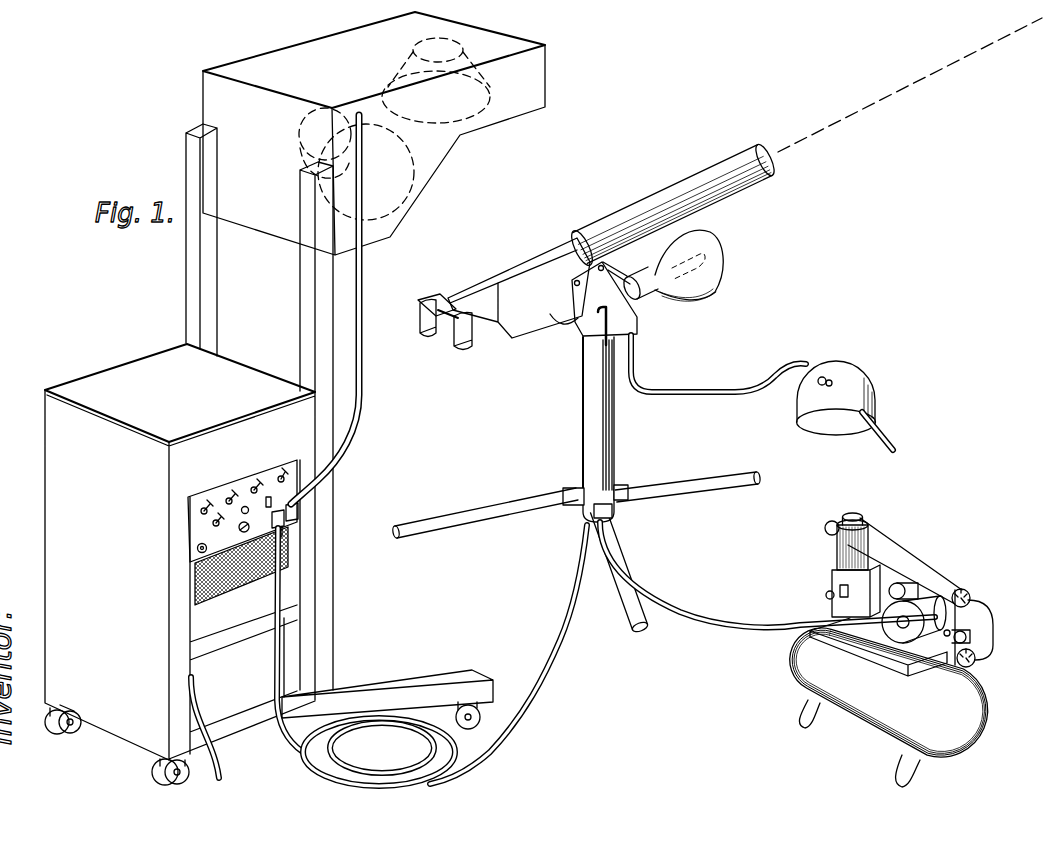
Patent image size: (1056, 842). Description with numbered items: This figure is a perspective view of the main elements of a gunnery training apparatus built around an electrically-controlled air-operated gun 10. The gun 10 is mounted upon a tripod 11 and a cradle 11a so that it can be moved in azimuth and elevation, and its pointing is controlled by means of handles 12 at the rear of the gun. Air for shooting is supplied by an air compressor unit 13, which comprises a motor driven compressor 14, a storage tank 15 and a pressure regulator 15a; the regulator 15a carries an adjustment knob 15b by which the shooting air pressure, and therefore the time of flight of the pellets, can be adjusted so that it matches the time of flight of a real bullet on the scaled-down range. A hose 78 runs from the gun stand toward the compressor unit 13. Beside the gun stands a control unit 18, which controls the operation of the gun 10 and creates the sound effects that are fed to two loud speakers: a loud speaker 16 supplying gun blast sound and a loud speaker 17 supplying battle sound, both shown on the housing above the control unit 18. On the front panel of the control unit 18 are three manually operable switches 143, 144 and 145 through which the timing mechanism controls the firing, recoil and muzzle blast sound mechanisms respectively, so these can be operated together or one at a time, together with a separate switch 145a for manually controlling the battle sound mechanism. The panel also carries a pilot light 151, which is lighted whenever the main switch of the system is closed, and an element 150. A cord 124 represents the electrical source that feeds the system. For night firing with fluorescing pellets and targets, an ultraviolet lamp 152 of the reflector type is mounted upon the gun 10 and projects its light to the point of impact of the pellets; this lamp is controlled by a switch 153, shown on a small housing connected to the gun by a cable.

The electrically-controlled air-operated gun 10 is at (601, 223).
The tripod 11 is at (582, 440).
The cradle 11a is at (553, 341).
The handles 12 is at (457, 345).
The air compressor unit 13 is at (931, 571).
The motor driven compressor 14 is at (834, 580).
The storage tank 15 is at (796, 677).
The pressure regulator 15a is at (969, 601).
The adjustment knob 15b is at (977, 645).
The loud speaker 16 is at (470, 121).
The loud speaker 17 is at (408, 181).
The control unit 18 is at (316, 553).
The air hose 78 is at (717, 624).
The source 124 is at (221, 764).
The manually operable switch 143 is at (203, 510).
The manually operable switch 144 is at (230, 498).
The manually operable switch 145 is at (256, 487).
The switch 145a is at (282, 476).
The spring 150 is at (214, 522).
The pilot light 151 is at (241, 528).
The ultraviolet lamp 152 is at (702, 297).
The switch 153 is at (818, 385).